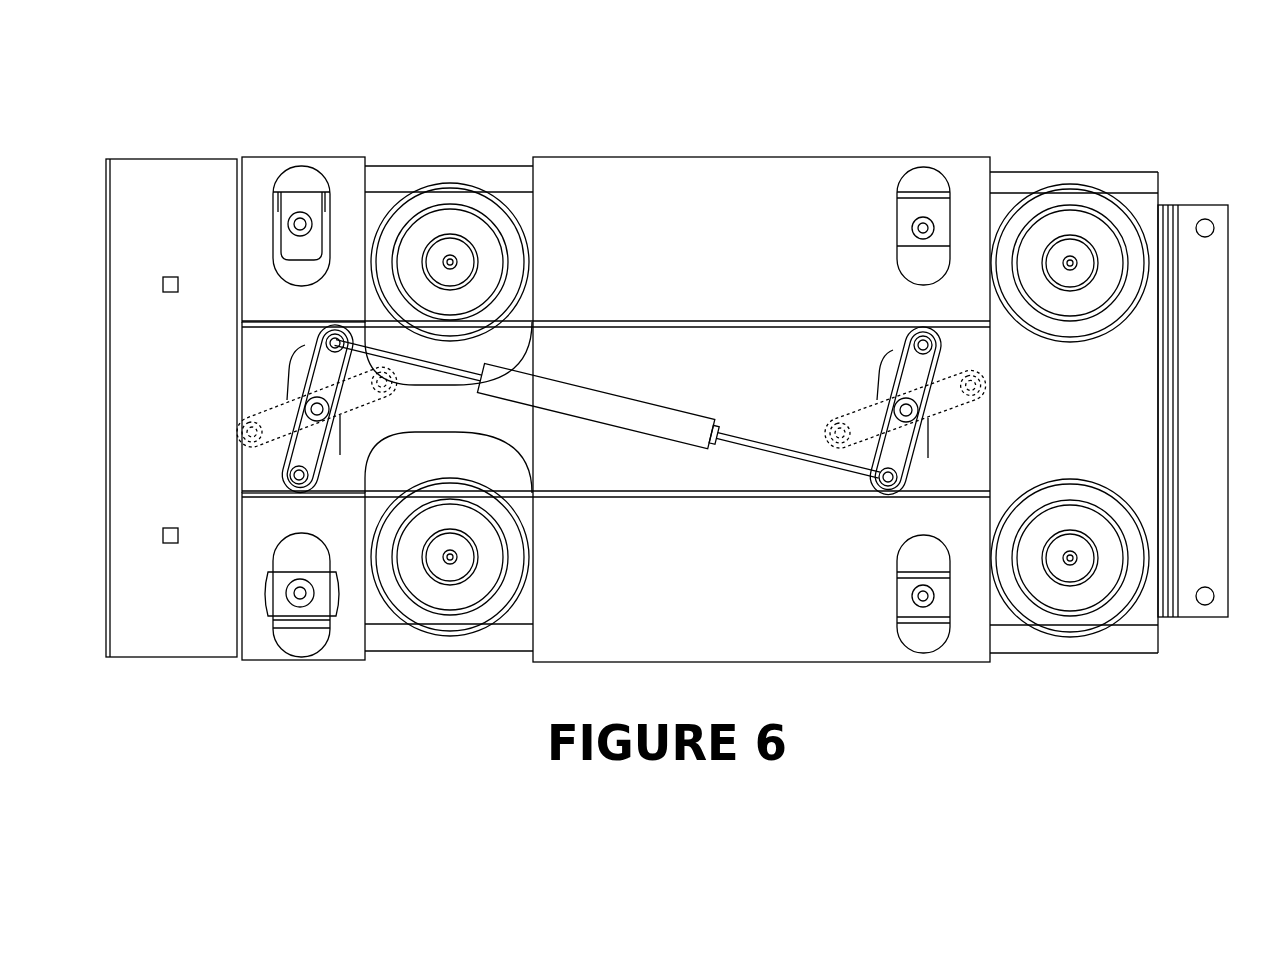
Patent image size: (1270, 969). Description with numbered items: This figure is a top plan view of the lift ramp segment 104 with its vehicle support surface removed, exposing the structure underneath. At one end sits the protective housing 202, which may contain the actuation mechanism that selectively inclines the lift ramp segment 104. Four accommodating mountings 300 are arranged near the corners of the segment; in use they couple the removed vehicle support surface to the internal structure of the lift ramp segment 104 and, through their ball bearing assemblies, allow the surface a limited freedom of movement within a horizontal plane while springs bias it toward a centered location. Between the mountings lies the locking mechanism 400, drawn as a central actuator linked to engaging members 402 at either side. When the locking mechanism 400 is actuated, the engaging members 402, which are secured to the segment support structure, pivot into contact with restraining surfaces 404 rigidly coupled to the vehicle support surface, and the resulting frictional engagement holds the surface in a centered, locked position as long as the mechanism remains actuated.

The lift ramp segment 104 is at (822, 108).
The protective housing 202 is at (178, 213).
The accommodating mountings 300 is at (460, 180).
The locking mechanism 400 is at (645, 392).
The engaging members 402 is at (1040, 392).
The restraining surfaces 404 is at (278, 330).